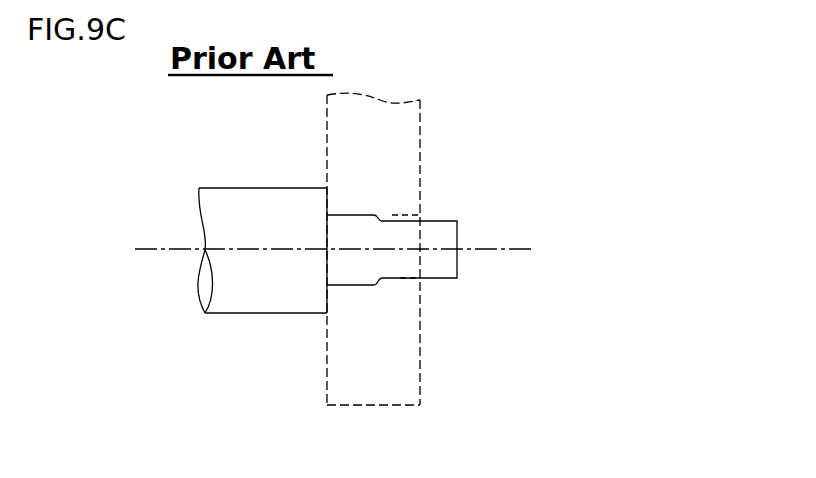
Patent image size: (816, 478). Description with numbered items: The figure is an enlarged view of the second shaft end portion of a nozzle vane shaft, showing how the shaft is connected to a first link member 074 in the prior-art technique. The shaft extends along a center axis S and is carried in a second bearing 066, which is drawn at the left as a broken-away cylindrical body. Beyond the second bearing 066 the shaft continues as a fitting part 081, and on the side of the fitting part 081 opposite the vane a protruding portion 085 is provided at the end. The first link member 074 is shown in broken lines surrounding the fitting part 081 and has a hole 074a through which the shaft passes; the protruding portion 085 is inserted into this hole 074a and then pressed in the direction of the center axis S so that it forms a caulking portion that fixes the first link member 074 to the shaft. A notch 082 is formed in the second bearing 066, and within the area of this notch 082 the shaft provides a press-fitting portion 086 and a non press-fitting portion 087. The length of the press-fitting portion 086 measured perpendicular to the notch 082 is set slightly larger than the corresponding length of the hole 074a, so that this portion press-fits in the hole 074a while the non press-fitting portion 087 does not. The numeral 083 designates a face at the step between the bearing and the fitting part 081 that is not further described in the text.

The center axis S is at (322, 250).
The second bearing 066 is at (269, 293).
The first link member 074 is at (421, 118).
The hole 074a is at (420, 284).
The fitting part 081 is at (397, 262).
The notch 082 is at (372, 318).
The end face 083 is at (329, 302).
The protruding portion 085 is at (458, 214).
The press-fitting portion 086 is at (352, 215).
The non press-fitting portion 087 is at (396, 216).